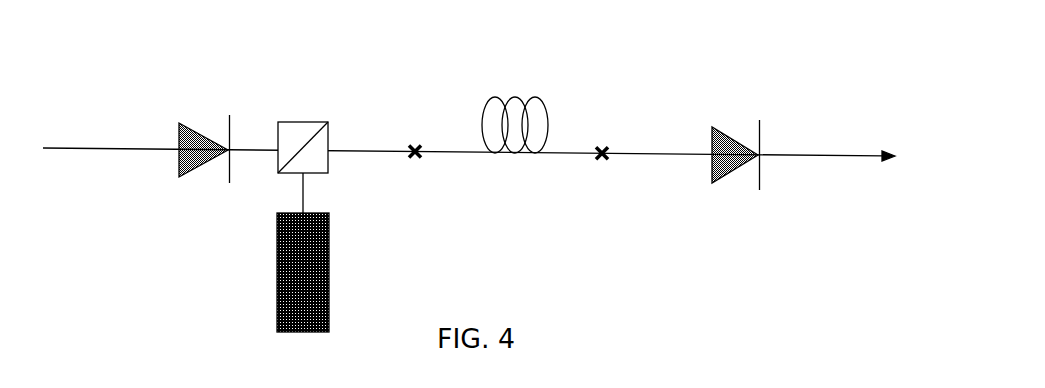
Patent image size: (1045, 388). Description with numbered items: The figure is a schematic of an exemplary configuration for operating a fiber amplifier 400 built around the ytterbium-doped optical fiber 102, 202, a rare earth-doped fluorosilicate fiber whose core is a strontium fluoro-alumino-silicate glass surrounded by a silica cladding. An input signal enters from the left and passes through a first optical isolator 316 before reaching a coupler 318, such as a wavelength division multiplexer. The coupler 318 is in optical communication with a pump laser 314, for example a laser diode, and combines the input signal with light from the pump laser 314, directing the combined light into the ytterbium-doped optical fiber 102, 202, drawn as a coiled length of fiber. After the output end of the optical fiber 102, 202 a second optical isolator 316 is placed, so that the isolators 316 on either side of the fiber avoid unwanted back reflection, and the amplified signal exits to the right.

The fiber amplifier 400 is at (342, 38).
The optical isolator 316 is at (180, 165).
The coupler 318 is at (303, 122).
The pump laser 314 is at (278, 247).
The ytterbium-doped optical fiber 102 is at (506, 96).
The ytterbium-doped optical fiber 202 is at (511, 85).